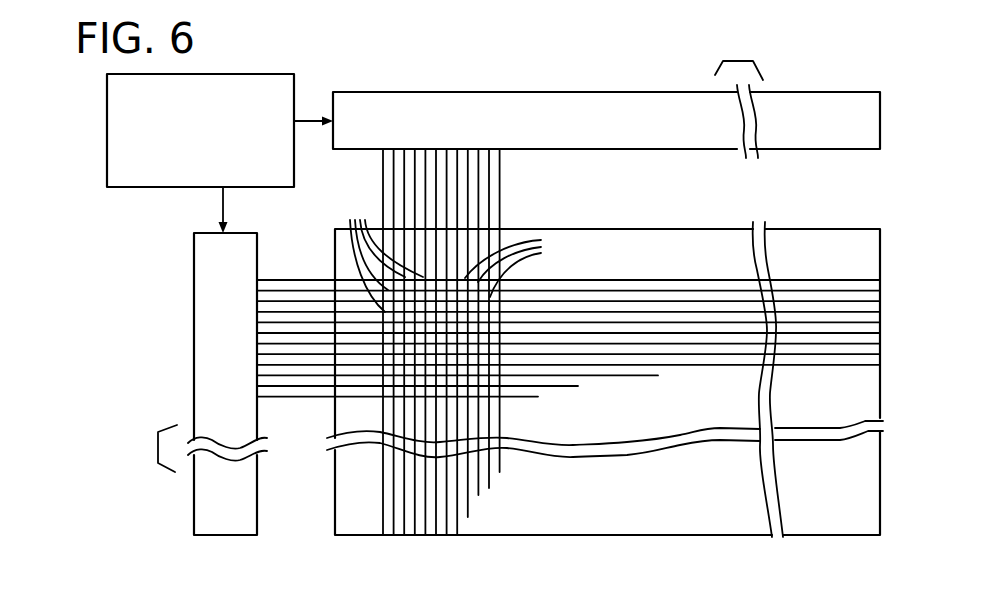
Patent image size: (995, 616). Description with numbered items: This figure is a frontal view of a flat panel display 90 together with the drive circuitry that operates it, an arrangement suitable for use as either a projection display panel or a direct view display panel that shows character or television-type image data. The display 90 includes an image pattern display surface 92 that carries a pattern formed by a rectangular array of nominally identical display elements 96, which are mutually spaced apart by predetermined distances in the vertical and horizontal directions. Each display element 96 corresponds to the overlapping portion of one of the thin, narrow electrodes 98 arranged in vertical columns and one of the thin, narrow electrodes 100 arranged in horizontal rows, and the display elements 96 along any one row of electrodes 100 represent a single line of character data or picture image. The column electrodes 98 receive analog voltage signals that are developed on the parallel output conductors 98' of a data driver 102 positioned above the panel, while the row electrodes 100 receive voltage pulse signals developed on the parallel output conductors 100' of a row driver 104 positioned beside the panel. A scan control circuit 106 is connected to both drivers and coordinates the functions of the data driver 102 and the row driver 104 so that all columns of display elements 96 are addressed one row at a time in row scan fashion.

The flat panel display 90 is at (720, 537).
The image pattern display surface 92 is at (608, 505).
The display elements 96 is at (458, 252).
The column electrodes 98 is at (473, 382).
The parallel output conductors of the data driver 98' is at (406, 189).
The row electrodes 100 is at (607, 315).
The parallel output conductors of the row driver 100' is at (296, 301).
The data driver 102 is at (782, 92).
The row driver 104 is at (194, 324).
The scan control circuit 106 is at (107, 157).